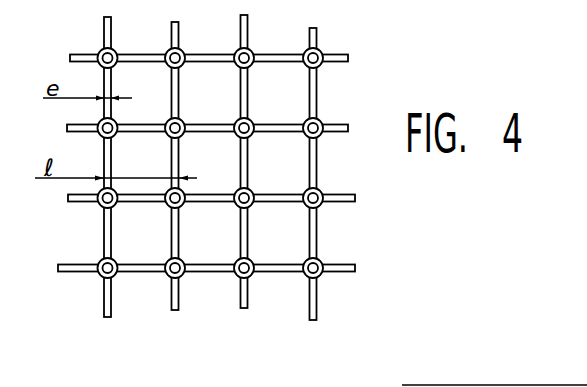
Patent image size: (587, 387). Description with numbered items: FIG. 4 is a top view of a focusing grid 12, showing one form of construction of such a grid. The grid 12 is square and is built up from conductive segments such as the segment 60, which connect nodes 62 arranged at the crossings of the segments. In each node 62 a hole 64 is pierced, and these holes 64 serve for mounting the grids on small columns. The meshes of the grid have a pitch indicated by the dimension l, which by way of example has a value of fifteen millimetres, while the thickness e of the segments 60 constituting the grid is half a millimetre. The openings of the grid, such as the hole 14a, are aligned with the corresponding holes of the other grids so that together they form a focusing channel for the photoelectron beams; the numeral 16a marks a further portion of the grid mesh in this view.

The focusing grid 12 is at (43, 268).
The hole 14a is at (105, 28).
The horizontal bar 16a is at (292, 90).
The conductive segment 60 is at (146, 274).
The node 62 is at (310, 272).
The hole 64 is at (322, 262).